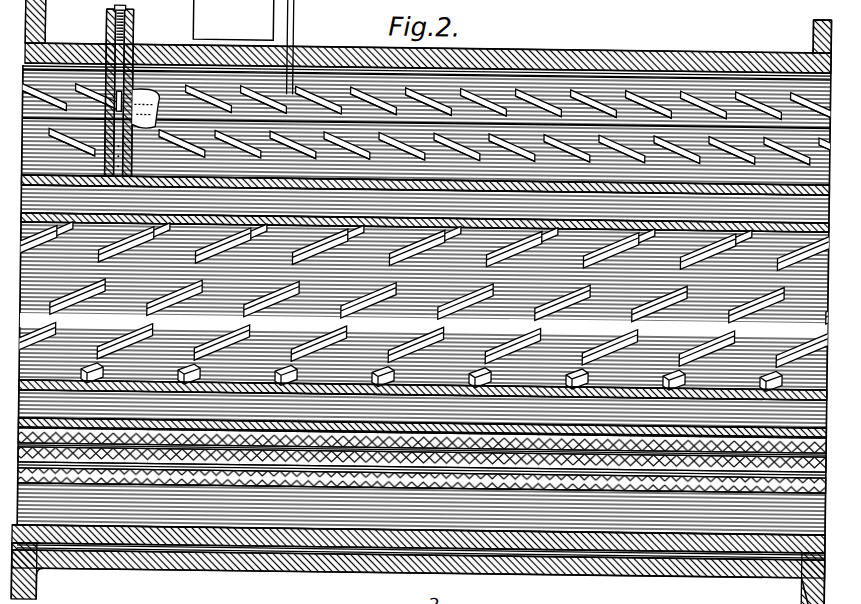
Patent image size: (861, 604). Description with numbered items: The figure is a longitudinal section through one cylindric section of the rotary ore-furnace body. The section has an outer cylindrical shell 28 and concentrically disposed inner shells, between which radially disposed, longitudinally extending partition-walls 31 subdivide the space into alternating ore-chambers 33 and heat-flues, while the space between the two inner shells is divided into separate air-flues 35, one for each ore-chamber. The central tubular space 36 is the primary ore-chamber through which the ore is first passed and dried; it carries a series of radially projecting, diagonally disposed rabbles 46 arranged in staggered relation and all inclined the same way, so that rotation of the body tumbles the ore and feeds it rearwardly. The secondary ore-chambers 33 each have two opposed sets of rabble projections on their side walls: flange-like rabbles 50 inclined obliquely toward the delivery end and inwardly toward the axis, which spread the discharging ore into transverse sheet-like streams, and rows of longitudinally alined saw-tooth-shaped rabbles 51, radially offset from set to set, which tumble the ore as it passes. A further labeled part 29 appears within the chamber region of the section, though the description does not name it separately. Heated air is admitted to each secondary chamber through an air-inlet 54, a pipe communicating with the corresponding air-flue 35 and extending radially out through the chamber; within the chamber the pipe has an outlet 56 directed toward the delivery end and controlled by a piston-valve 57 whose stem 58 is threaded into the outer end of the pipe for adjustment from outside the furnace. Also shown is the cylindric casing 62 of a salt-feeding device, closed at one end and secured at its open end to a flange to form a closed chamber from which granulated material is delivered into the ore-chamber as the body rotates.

The outer cylindrical shell 28 is at (574, 59).
The ore-chambers 33 is at (622, 82).
The rabble projections 50 is at (491, 109).
The air-inlet 54 is at (62, 115).
The outlet 56 is at (138, 96).
The piston-valve 57 is at (103, 100).
The stem 58 is at (110, 60).
The cylindric casing 62 is at (243, 47).
The partition-walls 31 is at (425, 213).
The air-flues 35 is at (425, 200).
The drying chamber 29 is at (258, 382).
The central tubular space 36 is at (422, 344).
The rabbles 46 is at (461, 341).
The rabble projections 51 is at (576, 492).